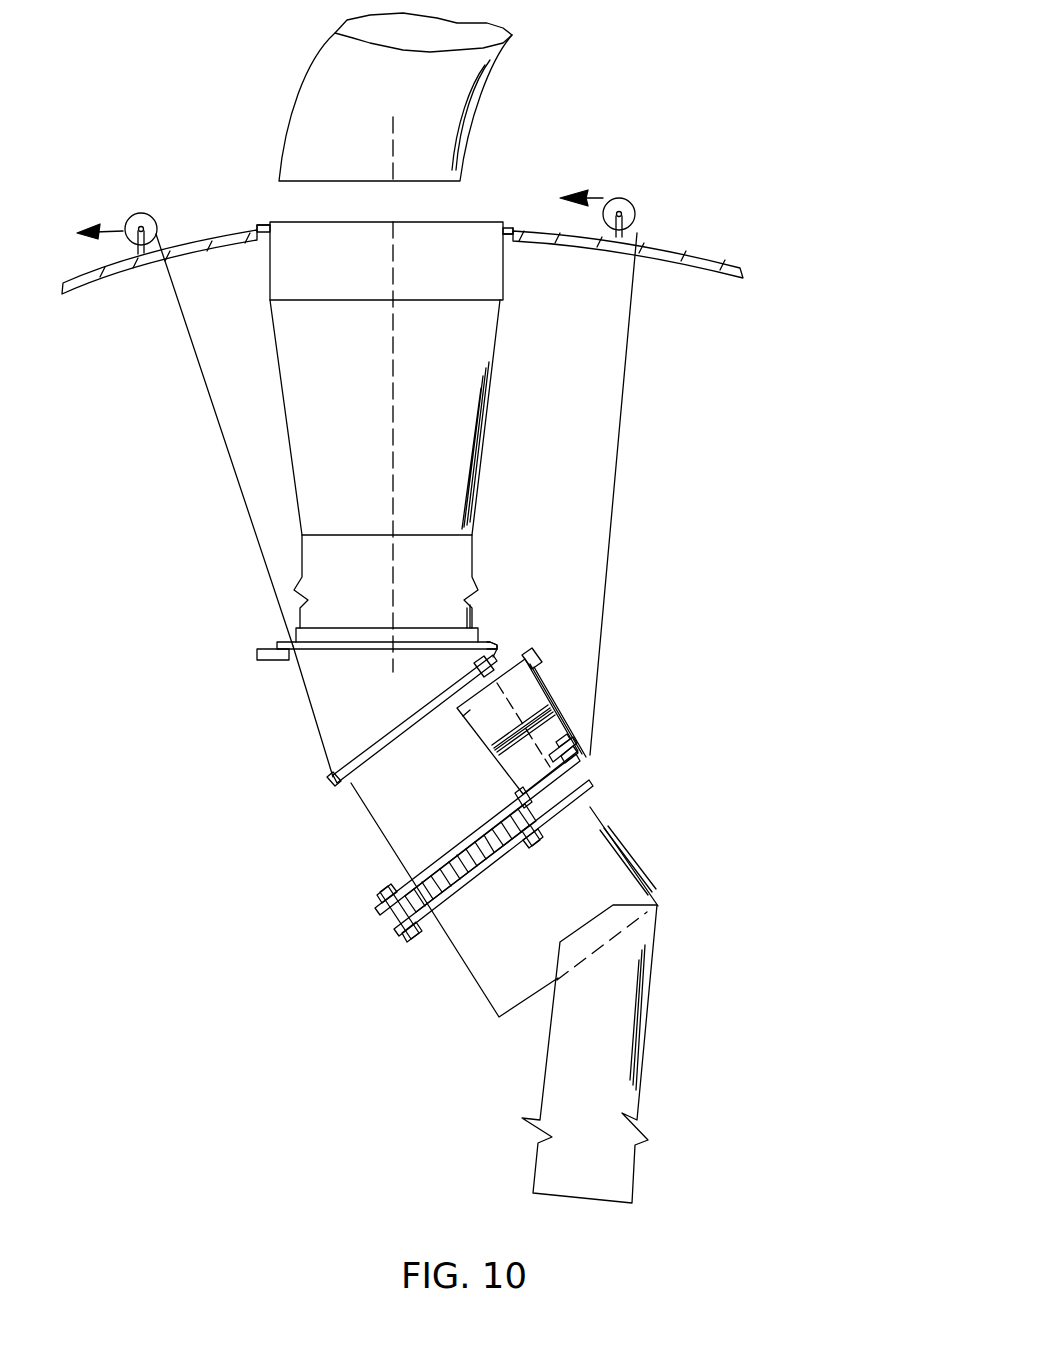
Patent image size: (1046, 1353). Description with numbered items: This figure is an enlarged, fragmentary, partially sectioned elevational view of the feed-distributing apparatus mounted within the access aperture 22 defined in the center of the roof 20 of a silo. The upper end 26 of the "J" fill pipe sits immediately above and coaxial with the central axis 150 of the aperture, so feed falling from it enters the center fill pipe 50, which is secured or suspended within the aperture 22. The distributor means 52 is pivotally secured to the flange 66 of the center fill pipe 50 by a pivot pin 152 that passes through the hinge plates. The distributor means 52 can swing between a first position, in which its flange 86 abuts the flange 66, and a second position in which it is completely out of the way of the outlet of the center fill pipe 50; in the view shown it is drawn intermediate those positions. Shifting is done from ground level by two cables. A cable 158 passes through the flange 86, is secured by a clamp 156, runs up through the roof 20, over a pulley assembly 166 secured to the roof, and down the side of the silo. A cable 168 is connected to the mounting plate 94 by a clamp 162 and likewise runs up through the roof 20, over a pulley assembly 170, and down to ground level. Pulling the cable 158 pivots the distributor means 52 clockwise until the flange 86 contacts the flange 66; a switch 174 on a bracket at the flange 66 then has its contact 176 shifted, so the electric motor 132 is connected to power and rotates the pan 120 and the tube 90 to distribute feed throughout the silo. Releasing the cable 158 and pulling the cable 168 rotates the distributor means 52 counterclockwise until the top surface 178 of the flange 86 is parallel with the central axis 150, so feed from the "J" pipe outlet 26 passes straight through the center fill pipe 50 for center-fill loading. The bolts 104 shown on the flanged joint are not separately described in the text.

The roof 20 is at (666, 242).
The access aperture 22 is at (508, 228).
The upper end of "J" pipe 26 is at (312, 52).
The center fill pipe 50 is at (478, 437).
The distributor means 52 is at (630, 804).
The flange 66 is at (480, 602).
The flange 86 is at (512, 662).
The tube 90 is at (632, 855).
The mounting plate 94 is at (380, 910).
The bolt 104 is at (534, 849).
The pan 120 is at (648, 990).
The motor 132 is at (488, 735).
The central axis 150 is at (394, 358).
The pivot pin 152 is at (499, 642).
The clamp 156 is at (333, 782).
The cable 158 is at (258, 528).
The clamp 162 is at (578, 758).
The pulley assembly 166 is at (150, 214).
The cable 168 is at (612, 540).
The pulley assembly 170 is at (627, 200).
The switch 174 is at (256, 654).
The contact 176 is at (294, 662).
The top surface 178 is at (478, 663).